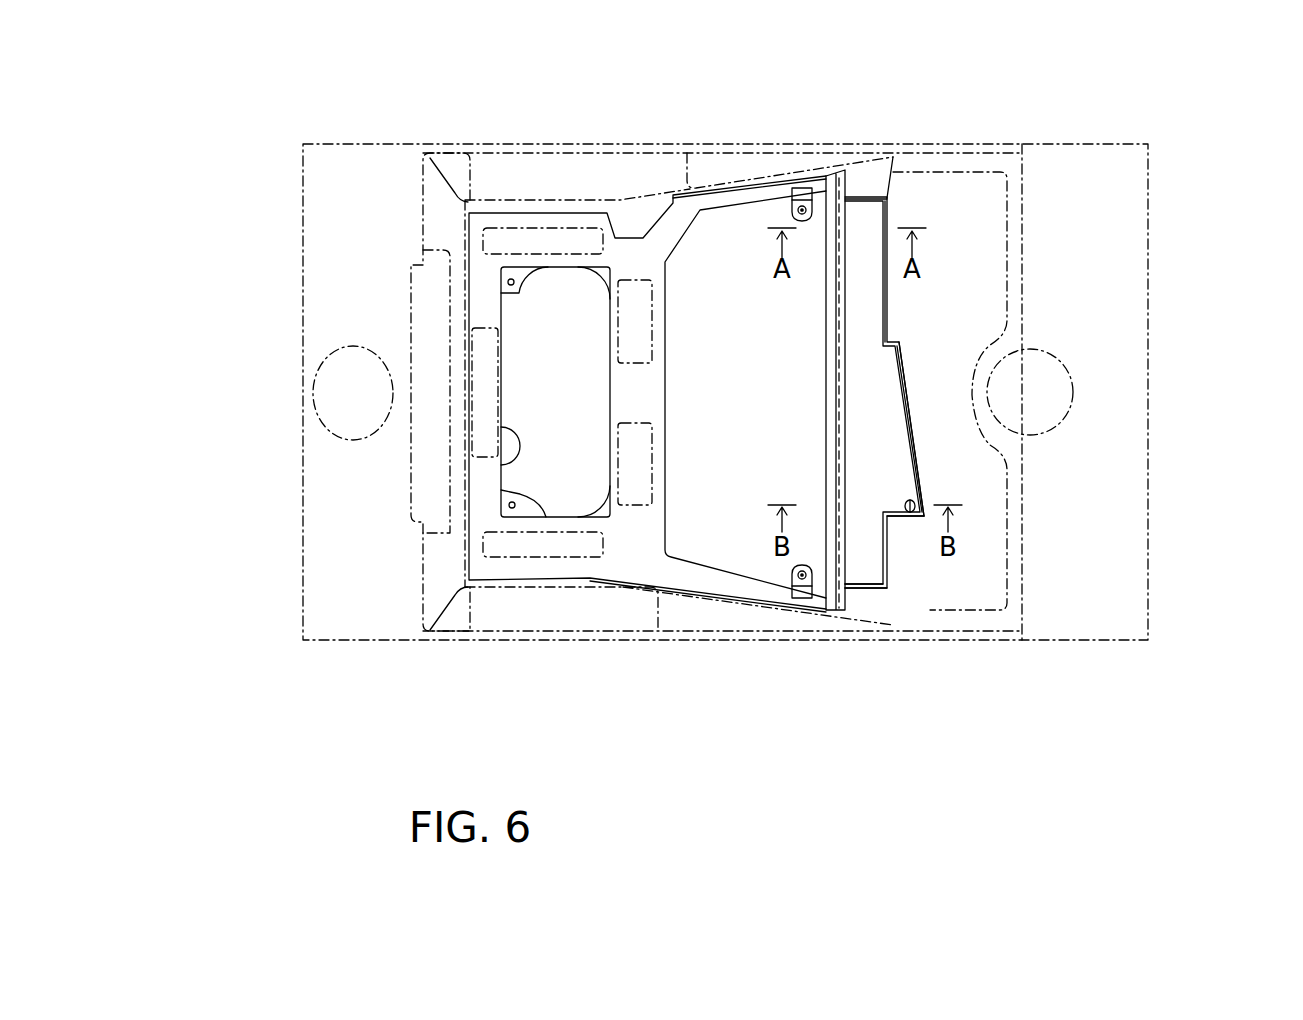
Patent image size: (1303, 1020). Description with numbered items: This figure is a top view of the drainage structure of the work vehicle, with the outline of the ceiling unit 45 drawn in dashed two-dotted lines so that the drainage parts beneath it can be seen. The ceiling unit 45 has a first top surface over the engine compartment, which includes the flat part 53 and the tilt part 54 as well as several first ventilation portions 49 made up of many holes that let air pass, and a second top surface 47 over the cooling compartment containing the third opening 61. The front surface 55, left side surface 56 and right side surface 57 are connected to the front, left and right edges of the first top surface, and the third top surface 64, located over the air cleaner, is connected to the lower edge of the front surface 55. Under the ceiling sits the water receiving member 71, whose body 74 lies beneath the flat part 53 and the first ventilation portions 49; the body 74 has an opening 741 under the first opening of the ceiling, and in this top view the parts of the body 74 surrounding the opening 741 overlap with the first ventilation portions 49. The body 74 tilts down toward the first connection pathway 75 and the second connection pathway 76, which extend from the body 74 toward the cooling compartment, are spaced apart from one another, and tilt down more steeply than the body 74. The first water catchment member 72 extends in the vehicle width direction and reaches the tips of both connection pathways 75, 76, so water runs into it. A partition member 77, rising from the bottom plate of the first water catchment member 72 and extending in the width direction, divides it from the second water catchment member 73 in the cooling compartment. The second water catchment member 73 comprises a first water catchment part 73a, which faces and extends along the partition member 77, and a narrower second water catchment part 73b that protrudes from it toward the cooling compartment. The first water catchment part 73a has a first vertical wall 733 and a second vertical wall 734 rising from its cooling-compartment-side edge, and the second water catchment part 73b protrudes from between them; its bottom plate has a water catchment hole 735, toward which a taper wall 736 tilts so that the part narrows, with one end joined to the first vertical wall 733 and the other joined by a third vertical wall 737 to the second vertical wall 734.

The ceiling unit 45 is at (280, 160).
The second top surface 47 is at (916, 165).
The first ventilation portions 49 is at (542, 226).
The flat part 53 is at (518, 200).
The tilt part 54 is at (722, 187).
The front surface 55 is at (440, 212).
The left side surface 56 is at (683, 613).
The right side surface 57 is at (698, 167).
The third opening 61 is at (968, 170).
The third top surface 64 is at (370, 322).
The water receiving member 71 is at (625, 216).
The first water catchment member 72 is at (822, 368).
The second water catchment member 73 is at (1232, 280).
The first water catchment part 73a is at (864, 304).
The second water catchment part 73b is at (902, 427).
The body 74 is at (490, 283).
The first connection pathway 75 is at (753, 187).
The second connection pathway 76 is at (743, 592).
The partition member 77 is at (823, 405).
The first vertical wall 733 is at (890, 225).
The second vertical wall 734 is at (892, 565).
The water catchment hole 735 is at (914, 501).
The taper wall 736 is at (918, 440).
The third vertical wall 737 is at (910, 540).
The opening 741 is at (500, 465).